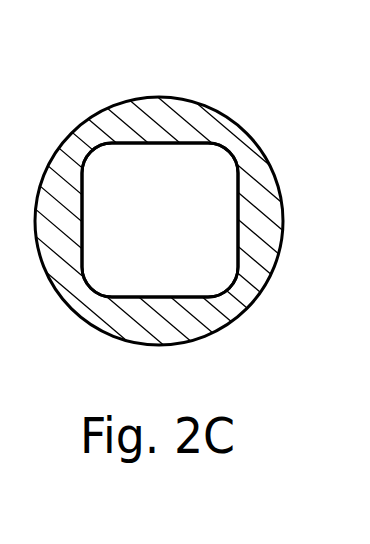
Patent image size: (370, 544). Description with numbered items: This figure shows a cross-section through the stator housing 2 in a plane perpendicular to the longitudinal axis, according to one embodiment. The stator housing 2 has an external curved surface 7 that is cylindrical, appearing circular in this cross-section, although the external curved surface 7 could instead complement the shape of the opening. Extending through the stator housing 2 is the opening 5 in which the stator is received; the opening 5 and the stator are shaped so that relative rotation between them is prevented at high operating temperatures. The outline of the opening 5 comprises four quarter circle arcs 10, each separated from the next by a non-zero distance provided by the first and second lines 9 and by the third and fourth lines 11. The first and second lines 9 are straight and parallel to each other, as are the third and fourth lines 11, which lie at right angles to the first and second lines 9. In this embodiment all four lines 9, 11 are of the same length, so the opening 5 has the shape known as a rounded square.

The stator housing 2 is at (88, 83).
The opening 5 is at (90, 282).
The external curved surface 7 is at (205, 108).
The first and second lines 9 is at (82, 220).
The quarter circle arcs 10 is at (92, 150).
The third and fourth lines 11 is at (159, 143).